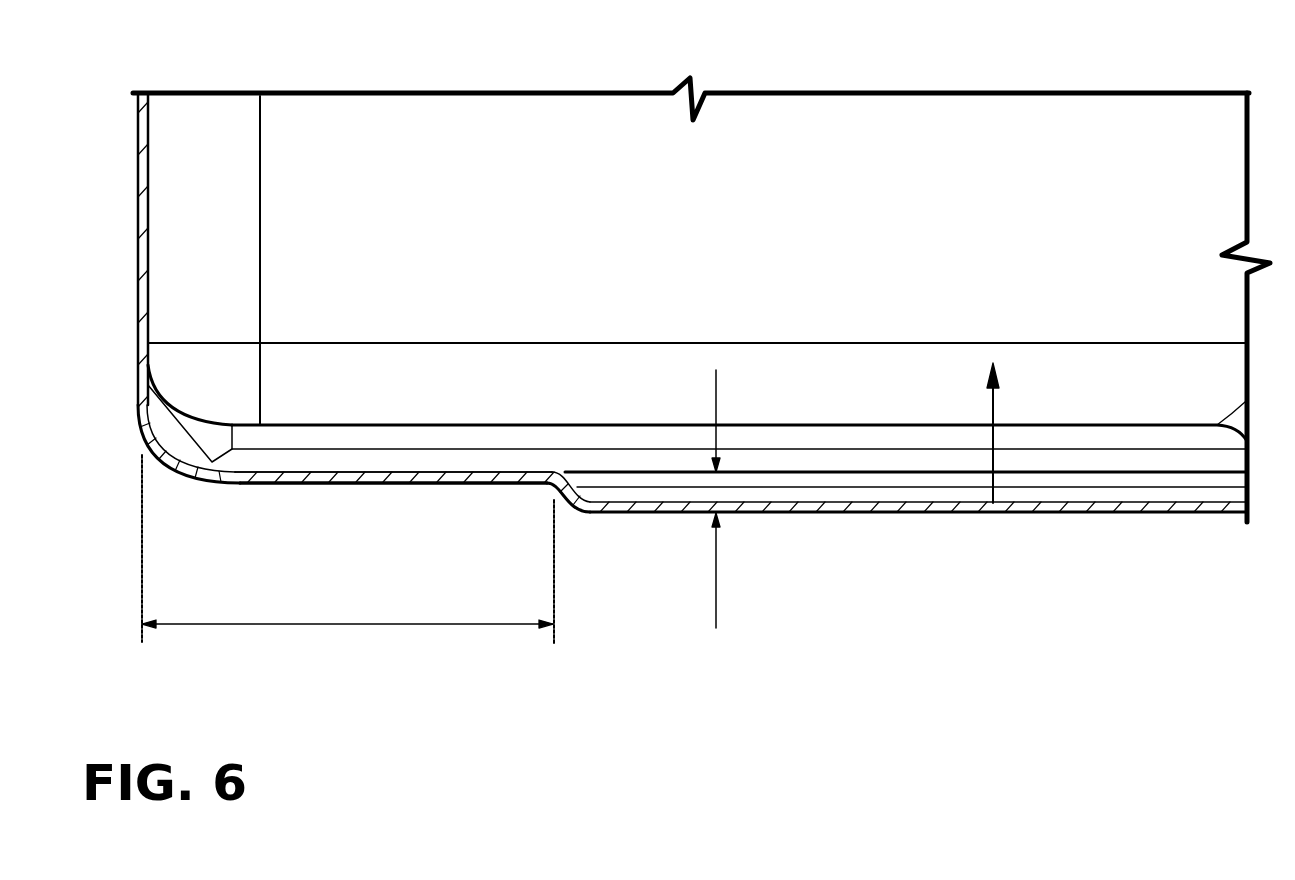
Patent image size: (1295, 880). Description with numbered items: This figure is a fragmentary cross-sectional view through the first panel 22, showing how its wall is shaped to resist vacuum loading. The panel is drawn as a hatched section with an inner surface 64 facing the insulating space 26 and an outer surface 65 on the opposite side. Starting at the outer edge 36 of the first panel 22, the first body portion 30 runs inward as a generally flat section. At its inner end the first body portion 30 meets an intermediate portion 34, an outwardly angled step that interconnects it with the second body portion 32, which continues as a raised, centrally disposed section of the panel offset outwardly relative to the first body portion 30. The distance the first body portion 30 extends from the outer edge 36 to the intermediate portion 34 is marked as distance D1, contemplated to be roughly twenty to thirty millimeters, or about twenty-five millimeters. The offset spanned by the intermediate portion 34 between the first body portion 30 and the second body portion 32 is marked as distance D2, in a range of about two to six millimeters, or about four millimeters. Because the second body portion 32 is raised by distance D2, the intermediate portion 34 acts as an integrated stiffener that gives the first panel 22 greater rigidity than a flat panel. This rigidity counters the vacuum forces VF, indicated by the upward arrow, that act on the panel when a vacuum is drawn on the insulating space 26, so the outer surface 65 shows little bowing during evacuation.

The first panel 22 is at (123, 226).
The insulating space 26 is at (810, 231).
The outer edge 36 is at (136, 360).
The first body portion 30 is at (312, 483).
The inner surface 64 is at (365, 472).
The outer surface 65 is at (447, 483).
The intermediate portion 34 is at (565, 500).
The second body portion 32 is at (875, 513).
The distance D1 is at (378, 623).
The distance D2 is at (717, 572).
The vacuum forces VF is at (993, 457).